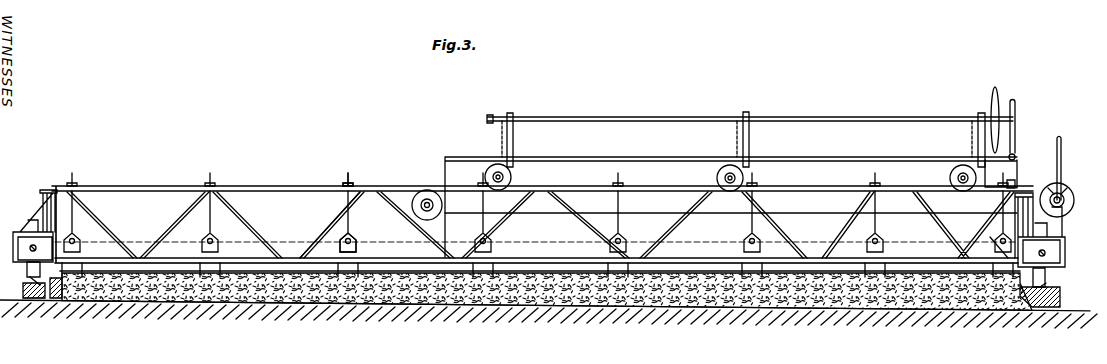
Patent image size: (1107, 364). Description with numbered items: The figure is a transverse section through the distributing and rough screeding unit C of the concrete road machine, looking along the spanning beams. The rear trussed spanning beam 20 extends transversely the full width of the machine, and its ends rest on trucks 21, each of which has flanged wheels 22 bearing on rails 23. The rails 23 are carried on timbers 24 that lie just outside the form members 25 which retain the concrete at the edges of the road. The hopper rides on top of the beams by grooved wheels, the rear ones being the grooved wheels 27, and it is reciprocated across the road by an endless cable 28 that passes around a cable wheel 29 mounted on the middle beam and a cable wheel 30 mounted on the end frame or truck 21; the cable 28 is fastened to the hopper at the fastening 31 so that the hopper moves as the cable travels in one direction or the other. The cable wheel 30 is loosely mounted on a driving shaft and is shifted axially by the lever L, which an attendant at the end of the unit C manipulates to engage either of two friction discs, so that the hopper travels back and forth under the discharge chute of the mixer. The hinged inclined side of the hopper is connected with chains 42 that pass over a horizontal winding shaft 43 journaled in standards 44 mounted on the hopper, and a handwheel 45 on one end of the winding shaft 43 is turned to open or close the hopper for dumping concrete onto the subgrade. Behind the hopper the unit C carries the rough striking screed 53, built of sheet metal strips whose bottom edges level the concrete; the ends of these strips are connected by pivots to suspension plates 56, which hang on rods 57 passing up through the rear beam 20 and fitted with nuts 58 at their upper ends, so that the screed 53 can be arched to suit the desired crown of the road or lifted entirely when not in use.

The trussed spanning beam 20 is at (318, 191).
The truck 21 is at (1070, 229).
The flanged wheel 22 is at (1046, 277).
The rail 23 is at (1050, 290).
The timber 24 is at (39, 300).
The form member 25 is at (56, 299).
The grooved wheel 27 is at (512, 178).
The endless cable 28 is at (731, 207).
The cable wheel 29 is at (428, 190).
The cable wheel 30 is at (1075, 195).
The cable fastening 31 is at (1013, 182).
The chain 42 is at (972, 143).
The winding shaft 43 is at (935, 118).
The standard 44 is at (750, 142).
The handwheel 45 is at (992, 94).
The rough striking screed 53 is at (545, 251).
The suspension plate 56 is at (350, 243).
The rod 57 is at (356, 220).
The nut 58 is at (351, 180).
The distributing and rough screeding unit C is at (731, 177).
The lever L is at (1062, 163).